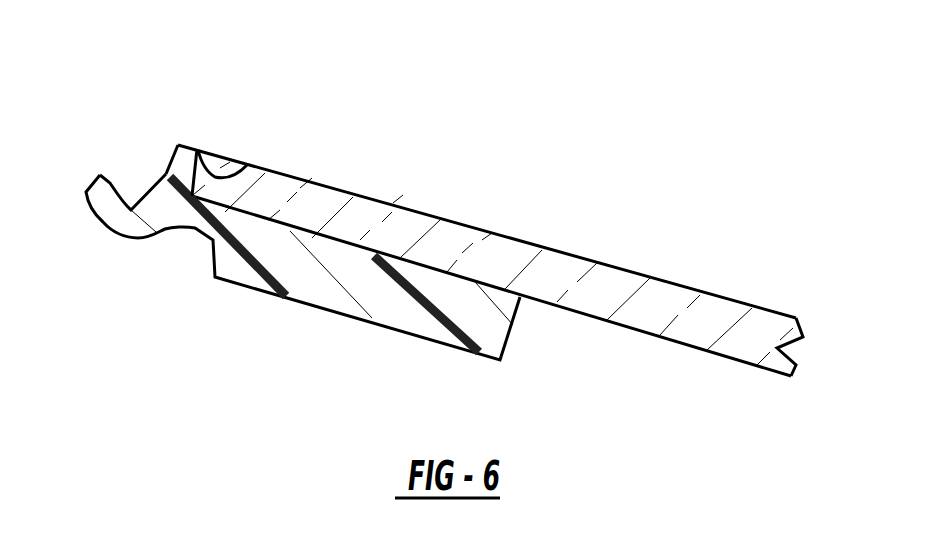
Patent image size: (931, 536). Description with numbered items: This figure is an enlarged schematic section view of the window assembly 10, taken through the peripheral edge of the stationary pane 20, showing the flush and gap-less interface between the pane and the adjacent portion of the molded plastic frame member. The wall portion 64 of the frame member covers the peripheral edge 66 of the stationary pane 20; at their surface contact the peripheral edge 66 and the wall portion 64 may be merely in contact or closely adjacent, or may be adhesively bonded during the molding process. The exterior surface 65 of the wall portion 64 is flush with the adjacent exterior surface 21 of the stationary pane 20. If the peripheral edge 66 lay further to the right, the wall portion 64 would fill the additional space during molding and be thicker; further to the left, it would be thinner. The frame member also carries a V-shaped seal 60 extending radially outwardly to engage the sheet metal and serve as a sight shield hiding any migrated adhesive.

The window assembly 10 is at (488, 121).
The stationary pane 20 is at (555, 270).
The exterior surface of stationary pane 21 is at (668, 282).
The V-shaped seal 60 is at (103, 195).
The wall portion 64 is at (180, 172).
The exterior surface of wall portion 65 is at (195, 149).
The peripheral edge 66 is at (247, 165).